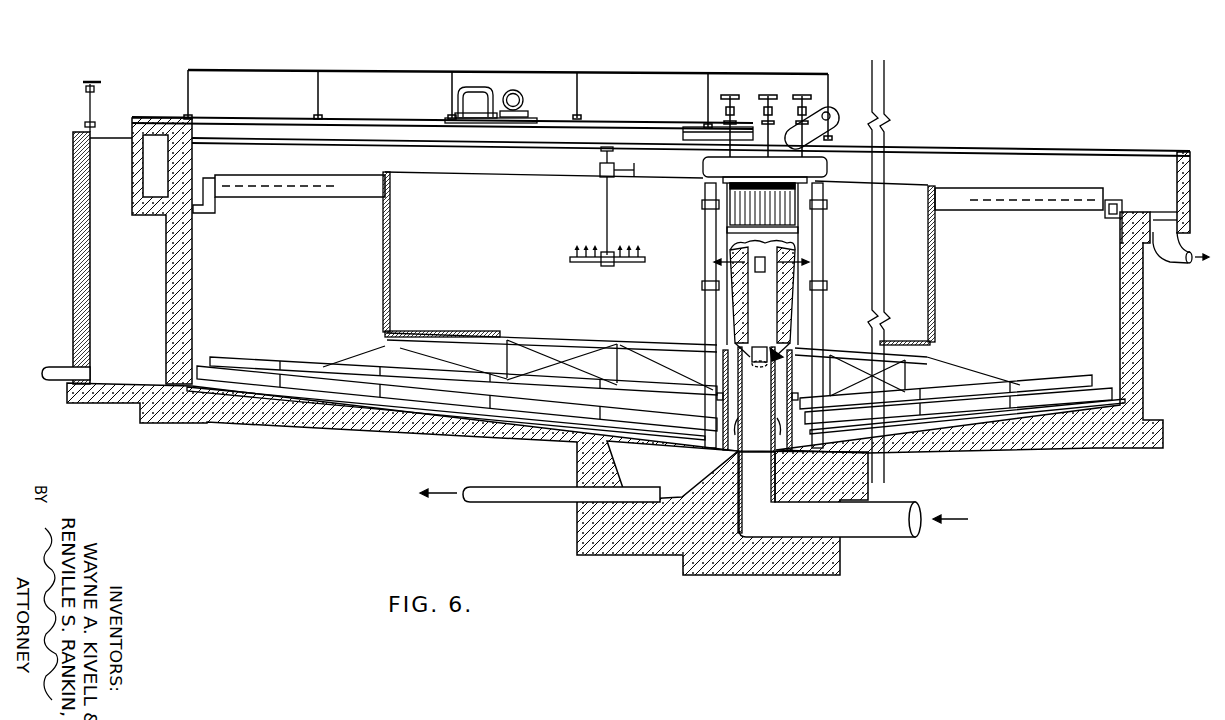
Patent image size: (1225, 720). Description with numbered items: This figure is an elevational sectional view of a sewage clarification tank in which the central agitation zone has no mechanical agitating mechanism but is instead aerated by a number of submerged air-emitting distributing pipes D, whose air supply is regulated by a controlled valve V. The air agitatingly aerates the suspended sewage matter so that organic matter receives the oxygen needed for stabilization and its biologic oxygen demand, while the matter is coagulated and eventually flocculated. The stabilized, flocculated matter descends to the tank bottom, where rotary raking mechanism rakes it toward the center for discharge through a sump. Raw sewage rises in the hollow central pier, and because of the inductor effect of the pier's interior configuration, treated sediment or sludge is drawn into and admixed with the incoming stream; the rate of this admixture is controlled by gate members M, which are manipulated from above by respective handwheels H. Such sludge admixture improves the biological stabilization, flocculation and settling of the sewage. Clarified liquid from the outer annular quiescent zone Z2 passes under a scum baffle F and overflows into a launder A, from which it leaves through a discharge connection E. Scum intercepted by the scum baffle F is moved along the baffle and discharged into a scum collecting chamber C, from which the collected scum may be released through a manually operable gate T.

The scum collecting chamber C is at (115, 190).
The scum baffle F is at (222, 177).
The launder A is at (1168, 214).
The discharge connection E is at (1173, 266).
The manually operable gate T is at (90, 372).
The handwheels H is at (802, 94).
The controlled valve V is at (600, 169).
The air-emitting distributing pipes D is at (613, 265).
The gate members M is at (722, 405).
The outer annular quiescent zone Z2 is at (361, 257).